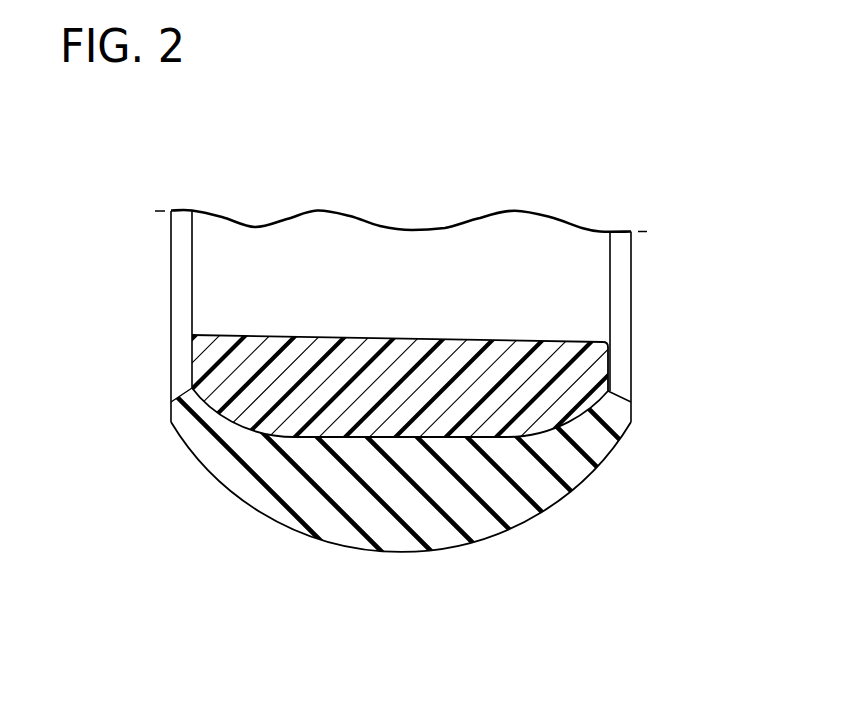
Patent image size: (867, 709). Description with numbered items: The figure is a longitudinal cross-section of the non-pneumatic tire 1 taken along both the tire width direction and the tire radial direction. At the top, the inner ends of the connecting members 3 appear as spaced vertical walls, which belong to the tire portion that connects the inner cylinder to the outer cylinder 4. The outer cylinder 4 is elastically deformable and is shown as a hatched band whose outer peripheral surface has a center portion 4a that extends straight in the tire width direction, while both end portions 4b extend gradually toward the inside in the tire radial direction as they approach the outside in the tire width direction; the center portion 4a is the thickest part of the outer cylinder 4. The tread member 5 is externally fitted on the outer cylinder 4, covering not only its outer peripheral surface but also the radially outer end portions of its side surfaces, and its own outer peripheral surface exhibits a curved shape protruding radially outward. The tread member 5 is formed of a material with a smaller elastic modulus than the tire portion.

The non-pneumatic tire 1 is at (637, 156).
The connecting member 3 is at (223, 283).
The outer cylinder 4 is at (557, 342).
The center portion 4a is at (403, 437).
The end portions 4b is at (226, 411).
The tread member 5 is at (360, 553).